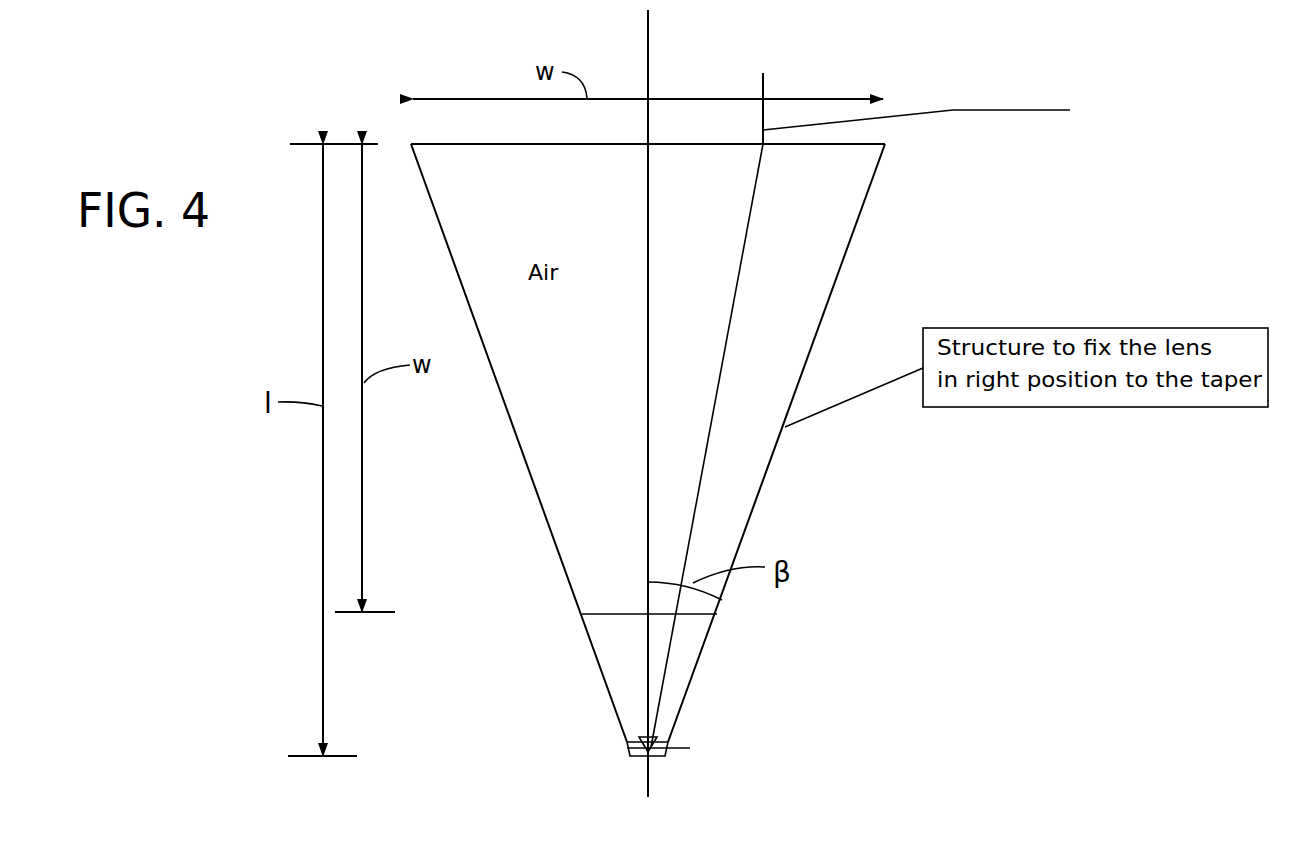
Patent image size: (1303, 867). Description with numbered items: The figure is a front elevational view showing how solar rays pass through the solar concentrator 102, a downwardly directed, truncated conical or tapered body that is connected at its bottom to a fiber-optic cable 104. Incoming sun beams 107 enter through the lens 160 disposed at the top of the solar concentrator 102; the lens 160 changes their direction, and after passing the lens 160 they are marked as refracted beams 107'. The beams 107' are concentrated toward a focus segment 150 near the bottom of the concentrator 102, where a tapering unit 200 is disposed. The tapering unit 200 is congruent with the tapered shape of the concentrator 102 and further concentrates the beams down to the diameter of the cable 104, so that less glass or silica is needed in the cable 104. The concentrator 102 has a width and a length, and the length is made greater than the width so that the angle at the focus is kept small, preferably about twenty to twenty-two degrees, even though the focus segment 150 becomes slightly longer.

The solar concentrator 102 is at (983, 183).
The lens 160 is at (455, 144).
The sun beams 107 is at (916, 85).
The refracted sun beams 107' is at (806, 445).
The focus segment 150 is at (665, 740).
The tapering unit 200 is at (632, 748).
The fiber-optic cable 104 is at (649, 768).